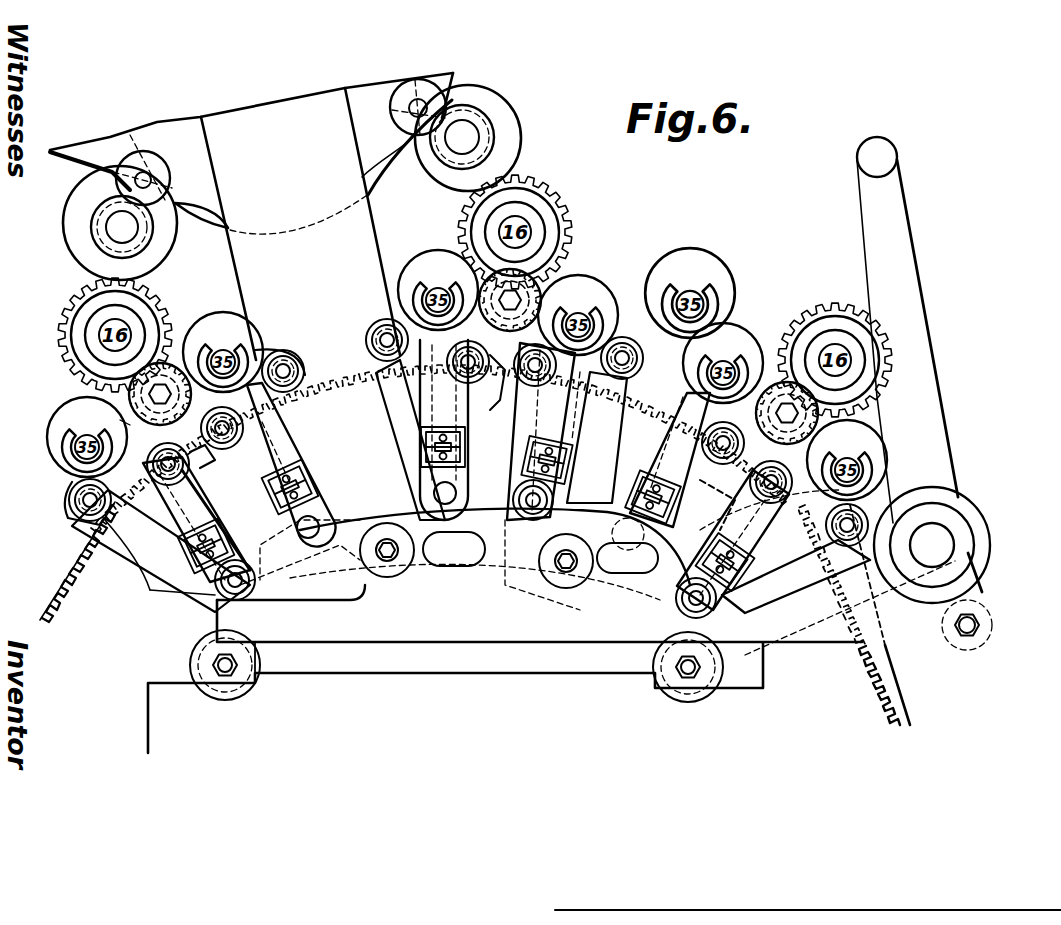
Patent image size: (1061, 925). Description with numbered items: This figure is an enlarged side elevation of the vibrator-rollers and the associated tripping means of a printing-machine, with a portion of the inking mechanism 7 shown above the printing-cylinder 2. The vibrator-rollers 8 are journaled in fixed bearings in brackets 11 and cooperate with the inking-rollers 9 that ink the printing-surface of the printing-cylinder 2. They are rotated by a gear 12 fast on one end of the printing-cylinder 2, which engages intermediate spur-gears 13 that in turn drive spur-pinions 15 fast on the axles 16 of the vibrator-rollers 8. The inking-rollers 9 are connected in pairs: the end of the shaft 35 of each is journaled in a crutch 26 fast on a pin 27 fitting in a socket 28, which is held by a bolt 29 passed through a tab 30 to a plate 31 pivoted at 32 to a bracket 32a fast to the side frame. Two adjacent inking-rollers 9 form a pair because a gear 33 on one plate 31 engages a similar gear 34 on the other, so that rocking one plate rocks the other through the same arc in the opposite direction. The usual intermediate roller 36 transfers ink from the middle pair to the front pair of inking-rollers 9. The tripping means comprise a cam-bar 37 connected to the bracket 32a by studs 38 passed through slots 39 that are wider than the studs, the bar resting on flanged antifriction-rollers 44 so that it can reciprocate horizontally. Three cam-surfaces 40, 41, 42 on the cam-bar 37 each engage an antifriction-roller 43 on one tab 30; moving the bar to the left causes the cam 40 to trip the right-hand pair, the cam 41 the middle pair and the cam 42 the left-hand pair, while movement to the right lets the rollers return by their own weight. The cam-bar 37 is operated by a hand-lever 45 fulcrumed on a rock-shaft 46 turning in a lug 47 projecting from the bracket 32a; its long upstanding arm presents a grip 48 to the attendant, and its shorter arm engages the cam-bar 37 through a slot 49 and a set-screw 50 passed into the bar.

The printing-cylinder 2 is at (85, 560).
The inking mechanism 7 is at (212, 218).
The vibrator-rollers 8 is at (75, 298).
The inking-rollers 9 is at (467, 376).
The brackets 11 is at (78, 350).
The gear 12 is at (62, 584).
The intermediate spur-gears 13 is at (185, 345).
The spur-pinions 15 is at (63, 328).
The axles of the vibrator-rollers 16 is at (475, 296).
The crutch 26 is at (120, 420).
The pin 27 is at (72, 482).
The socket 28 is at (200, 503).
The bolt 29 is at (317, 525).
The tab 30 is at (215, 578).
The plate 31 is at (303, 417).
The pivot 32 is at (80, 500).
The bracket 32a is at (182, 615).
The gear 33 is at (255, 465).
The gear 34 is at (460, 405).
The shaft 35 is at (91, 447).
The intermediate roller 36 is at (708, 268).
The cam-bar 37 is at (550, 554).
The studs 38 is at (360, 556).
The slots 39 is at (560, 590).
The cam-surface 40 is at (780, 592).
The cam-surface 41 is at (565, 520).
The cam-surface 42 is at (275, 590).
The antifriction-roller 43 is at (150, 600).
The flanged antifriction-rollers 44 is at (208, 688).
The hand-lever 45 is at (935, 470).
The rock-shaft 46 is at (932, 545).
The lug 47 is at (990, 545).
The grip 48 is at (897, 158).
The slot 49 is at (970, 600).
The set-screw 50 is at (967, 635).